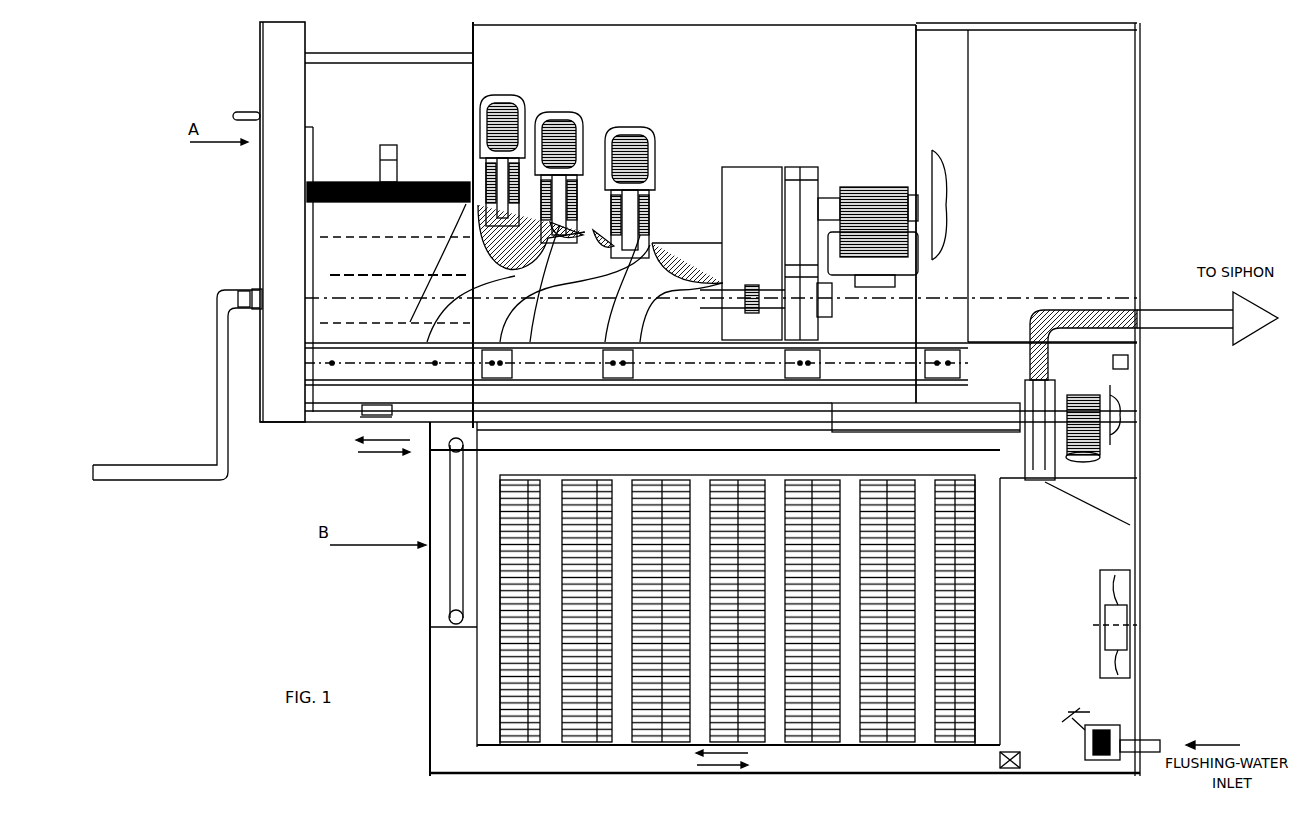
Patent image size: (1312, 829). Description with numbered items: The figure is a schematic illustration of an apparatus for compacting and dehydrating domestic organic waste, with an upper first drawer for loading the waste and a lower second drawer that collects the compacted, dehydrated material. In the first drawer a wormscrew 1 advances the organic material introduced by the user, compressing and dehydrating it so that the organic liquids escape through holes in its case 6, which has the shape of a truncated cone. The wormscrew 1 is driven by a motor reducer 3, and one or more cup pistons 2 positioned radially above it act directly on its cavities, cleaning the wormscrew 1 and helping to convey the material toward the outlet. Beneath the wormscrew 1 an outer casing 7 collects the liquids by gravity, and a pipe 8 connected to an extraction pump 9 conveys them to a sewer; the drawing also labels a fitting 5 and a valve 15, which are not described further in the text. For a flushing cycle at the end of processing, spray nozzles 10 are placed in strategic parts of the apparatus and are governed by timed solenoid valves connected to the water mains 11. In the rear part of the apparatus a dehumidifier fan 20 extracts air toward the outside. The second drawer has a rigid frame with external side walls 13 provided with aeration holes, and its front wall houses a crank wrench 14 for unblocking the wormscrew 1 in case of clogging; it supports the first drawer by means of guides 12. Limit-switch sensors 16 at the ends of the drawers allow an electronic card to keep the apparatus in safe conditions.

The wormscrew 1 is at (428, 272).
The cup pistons 2 is at (533, 102).
The motor reducer 3 is at (825, 172).
The inlet fitting 5 is at (240, 303).
The case 6 is at (690, 238).
The outer casing 7 is at (665, 403).
The pipe 8 is at (988, 397).
The extraction pump 9 is at (1066, 390).
The spray nozzles 10 is at (548, 381).
The water mains 11 is at (1078, 727).
The guides 12 is at (721, 364).
The external side walls 13 is at (625, 491).
The crank wrench 14 is at (442, 603).
The drain valve 15 is at (996, 760).
The limit-switch sensors 16 is at (1117, 345).
The dehumidifier fan 20 is at (1100, 590).